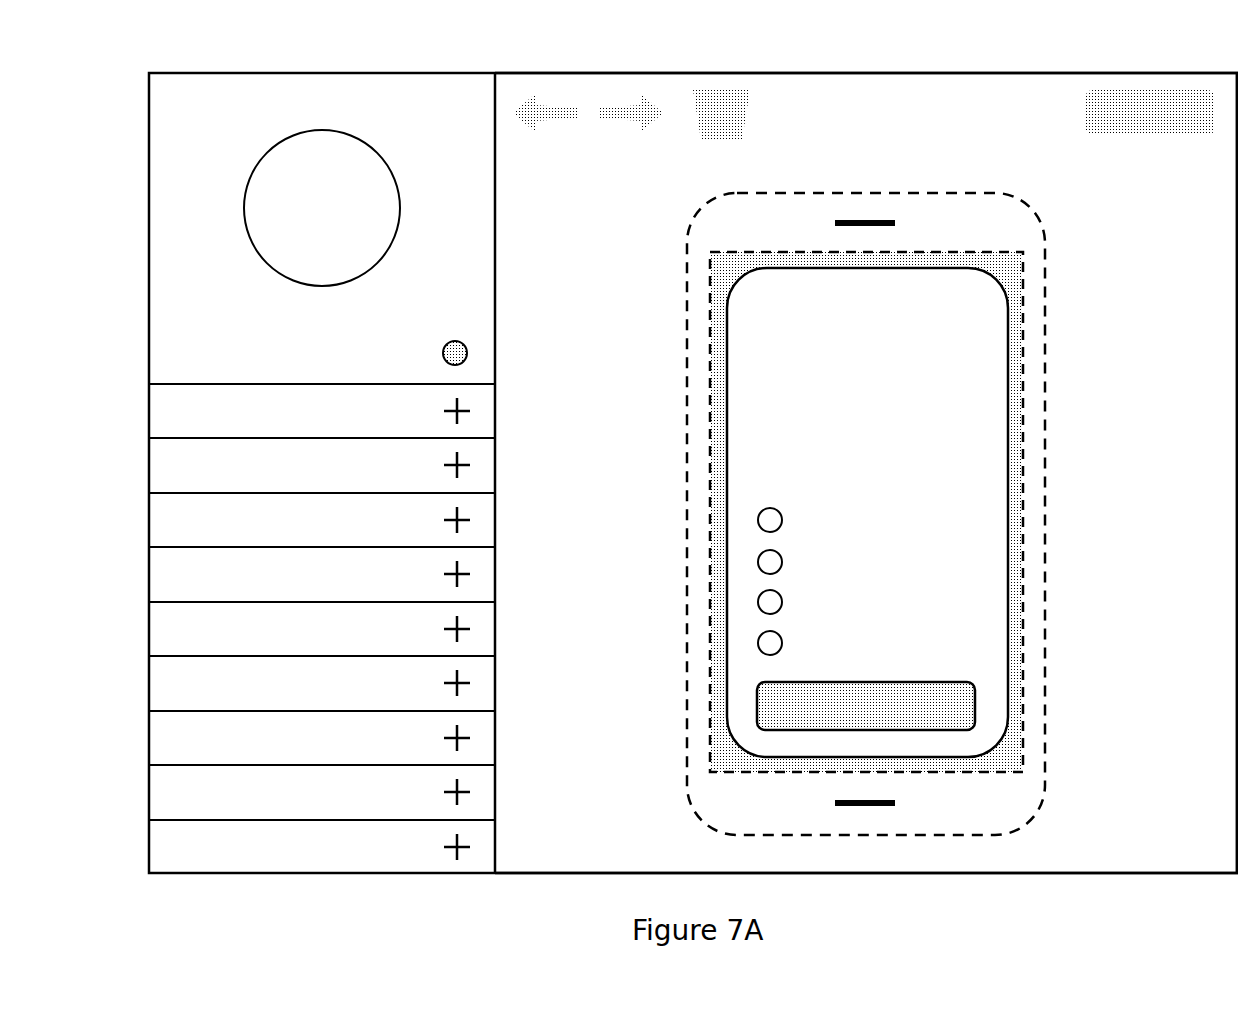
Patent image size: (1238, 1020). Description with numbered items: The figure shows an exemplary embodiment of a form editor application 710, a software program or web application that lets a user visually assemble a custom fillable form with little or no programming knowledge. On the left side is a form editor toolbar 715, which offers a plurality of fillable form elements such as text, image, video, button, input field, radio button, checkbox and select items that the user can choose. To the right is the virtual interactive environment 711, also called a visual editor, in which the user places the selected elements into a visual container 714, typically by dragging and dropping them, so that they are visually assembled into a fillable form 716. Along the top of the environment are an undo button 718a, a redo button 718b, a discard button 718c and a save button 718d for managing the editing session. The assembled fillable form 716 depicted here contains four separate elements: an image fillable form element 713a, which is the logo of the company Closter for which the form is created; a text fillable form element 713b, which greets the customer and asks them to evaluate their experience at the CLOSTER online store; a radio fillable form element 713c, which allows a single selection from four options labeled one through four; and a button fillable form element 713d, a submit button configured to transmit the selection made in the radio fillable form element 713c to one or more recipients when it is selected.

The form editor application 710 is at (347, 100).
The virtual interactive environment 711 is at (866, 473).
The image fillable form element 713a is at (900, 316).
The text fillable form element 713b is at (733, 396).
The radio fillable form element 713c is at (836, 502).
The button fillable form element 713d is at (982, 705).
The visual container 714 is at (1014, 511).
The form editor toolbar 715 is at (143, 624).
The fillable form 716 is at (764, 315).
The undo button 718a is at (545, 131).
The redo button 718b is at (630, 131).
The discard button 718c is at (721, 129).
The save button 718d is at (1150, 129).